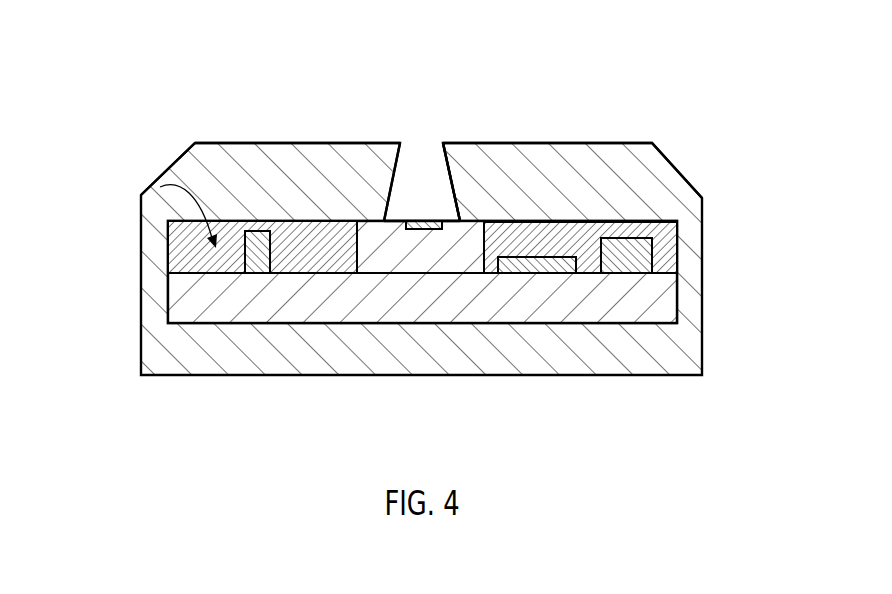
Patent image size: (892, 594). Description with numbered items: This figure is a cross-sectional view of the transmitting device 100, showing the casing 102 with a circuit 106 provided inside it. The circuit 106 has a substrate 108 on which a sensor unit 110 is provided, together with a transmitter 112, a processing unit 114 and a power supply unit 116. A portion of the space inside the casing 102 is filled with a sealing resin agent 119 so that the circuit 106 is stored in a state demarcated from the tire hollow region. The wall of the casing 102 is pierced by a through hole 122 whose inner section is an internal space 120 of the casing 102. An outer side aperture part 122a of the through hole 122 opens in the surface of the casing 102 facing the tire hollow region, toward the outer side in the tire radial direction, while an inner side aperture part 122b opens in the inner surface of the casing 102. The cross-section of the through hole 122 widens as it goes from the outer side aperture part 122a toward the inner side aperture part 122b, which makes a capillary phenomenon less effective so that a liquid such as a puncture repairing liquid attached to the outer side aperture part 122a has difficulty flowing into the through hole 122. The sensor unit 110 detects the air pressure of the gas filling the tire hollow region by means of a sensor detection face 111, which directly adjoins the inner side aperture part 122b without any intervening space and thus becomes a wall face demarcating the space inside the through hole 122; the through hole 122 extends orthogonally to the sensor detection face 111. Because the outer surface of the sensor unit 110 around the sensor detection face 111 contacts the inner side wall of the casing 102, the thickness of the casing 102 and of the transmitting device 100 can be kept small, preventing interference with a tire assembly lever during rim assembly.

The transmitting device 100 is at (563, 103).
The casing 102 is at (675, 167).
The circuit 106 is at (157, 180).
The substrate 108 is at (315, 298).
The sensor unit 110 is at (443, 265).
The sensor detection face 111 is at (440, 180).
The transmitter 112 is at (627, 272).
The processing unit 114 is at (535, 258).
The power supply unit 116 is at (255, 268).
The sealing resin agent 119 is at (292, 221).
The internal space 120 is at (408, 233).
The through hole 122 is at (425, 218).
The outer side aperture part 122a is at (422, 155).
The inner side aperture part 122b is at (410, 220).